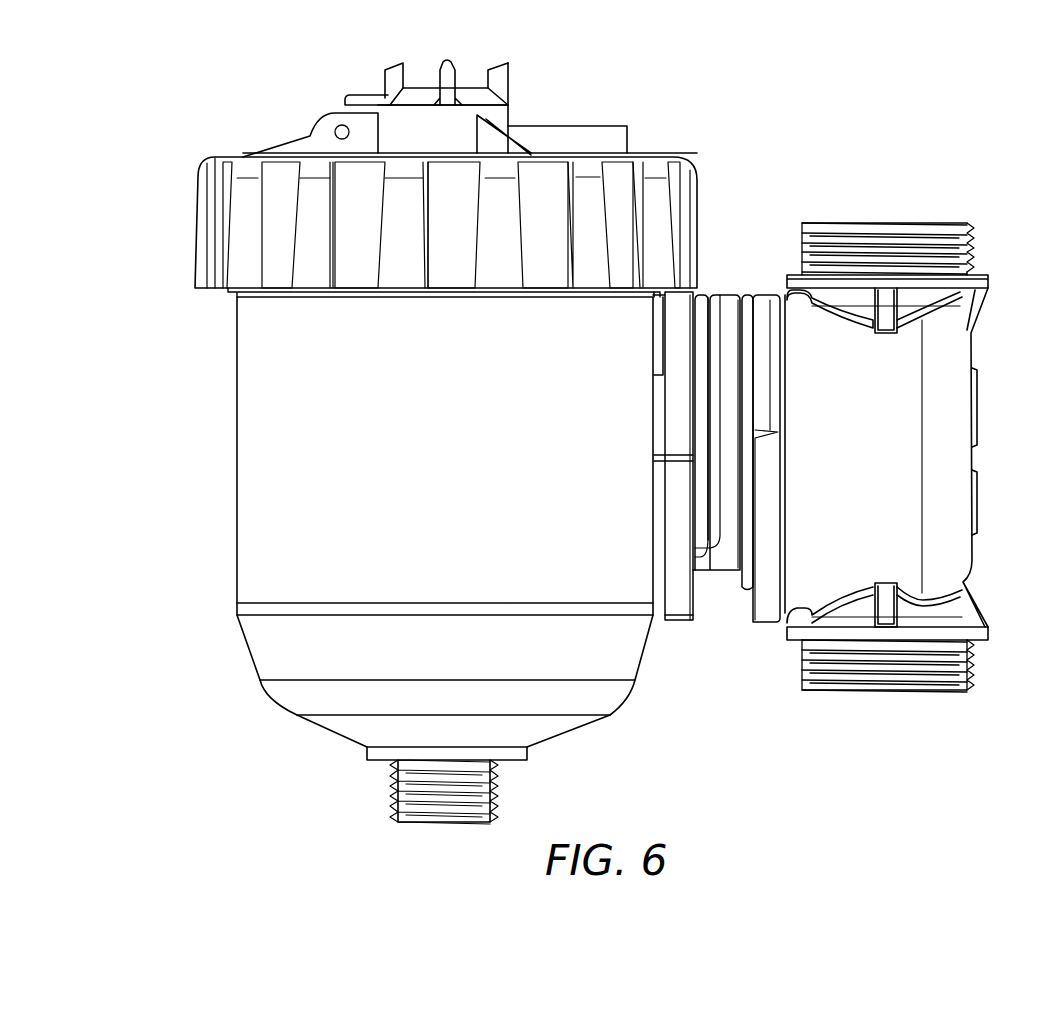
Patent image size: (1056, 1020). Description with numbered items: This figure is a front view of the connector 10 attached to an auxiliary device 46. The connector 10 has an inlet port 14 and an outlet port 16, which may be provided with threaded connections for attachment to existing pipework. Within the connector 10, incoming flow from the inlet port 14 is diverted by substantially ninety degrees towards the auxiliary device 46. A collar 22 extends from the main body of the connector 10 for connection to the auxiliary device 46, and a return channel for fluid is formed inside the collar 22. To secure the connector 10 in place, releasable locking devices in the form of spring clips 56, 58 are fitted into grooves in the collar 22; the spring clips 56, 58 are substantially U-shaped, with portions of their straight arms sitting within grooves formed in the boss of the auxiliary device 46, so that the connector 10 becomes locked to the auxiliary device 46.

The connector 10 is at (977, 353).
The inlet port 14 is at (887, 693).
The outlet port 16 is at (888, 223).
The collar 22 is at (715, 622).
The auxiliary device 46 is at (235, 415).
The spring clip 56 is at (746, 297).
The spring clip 58 is at (703, 297).